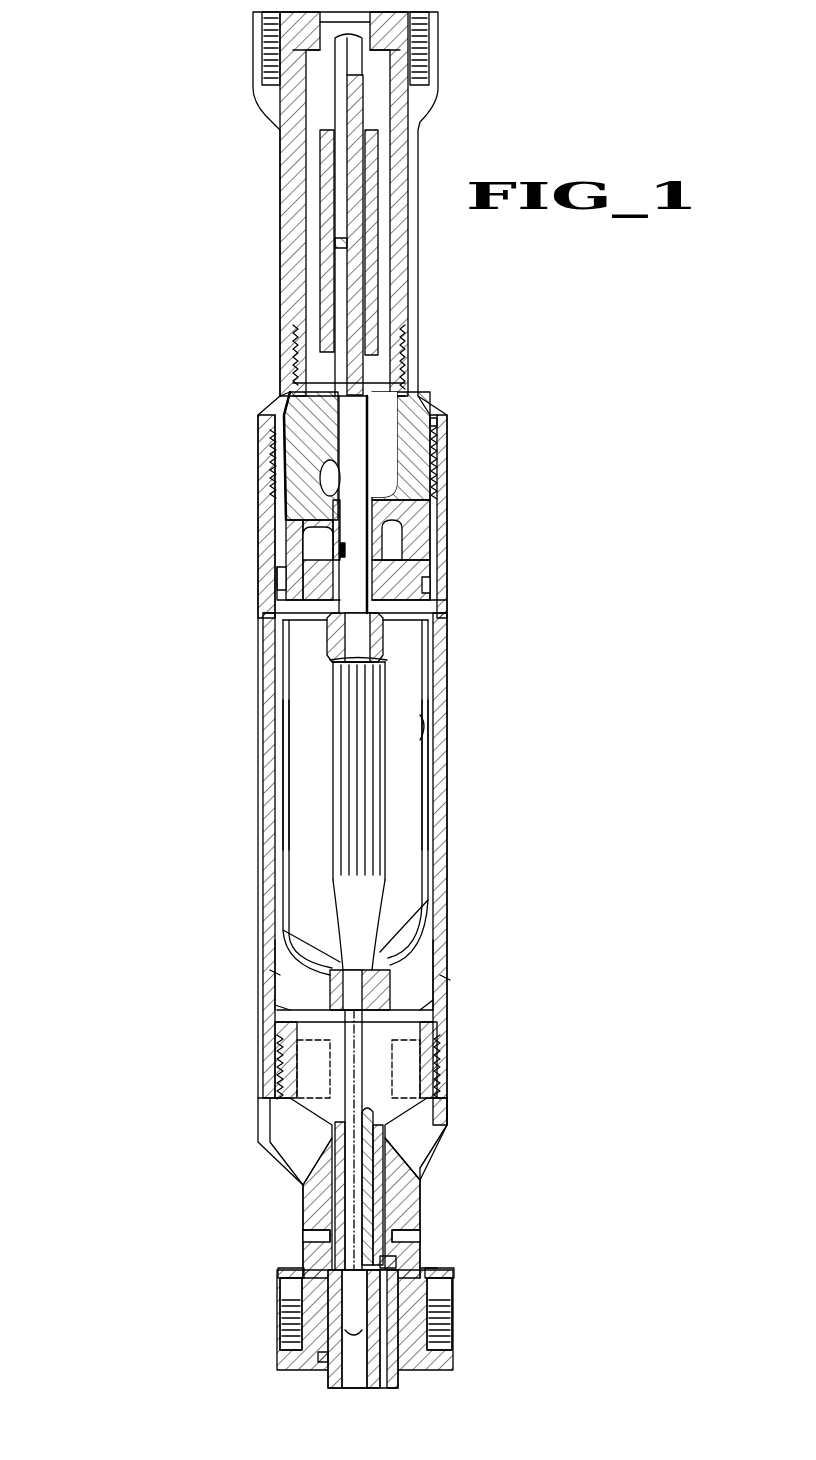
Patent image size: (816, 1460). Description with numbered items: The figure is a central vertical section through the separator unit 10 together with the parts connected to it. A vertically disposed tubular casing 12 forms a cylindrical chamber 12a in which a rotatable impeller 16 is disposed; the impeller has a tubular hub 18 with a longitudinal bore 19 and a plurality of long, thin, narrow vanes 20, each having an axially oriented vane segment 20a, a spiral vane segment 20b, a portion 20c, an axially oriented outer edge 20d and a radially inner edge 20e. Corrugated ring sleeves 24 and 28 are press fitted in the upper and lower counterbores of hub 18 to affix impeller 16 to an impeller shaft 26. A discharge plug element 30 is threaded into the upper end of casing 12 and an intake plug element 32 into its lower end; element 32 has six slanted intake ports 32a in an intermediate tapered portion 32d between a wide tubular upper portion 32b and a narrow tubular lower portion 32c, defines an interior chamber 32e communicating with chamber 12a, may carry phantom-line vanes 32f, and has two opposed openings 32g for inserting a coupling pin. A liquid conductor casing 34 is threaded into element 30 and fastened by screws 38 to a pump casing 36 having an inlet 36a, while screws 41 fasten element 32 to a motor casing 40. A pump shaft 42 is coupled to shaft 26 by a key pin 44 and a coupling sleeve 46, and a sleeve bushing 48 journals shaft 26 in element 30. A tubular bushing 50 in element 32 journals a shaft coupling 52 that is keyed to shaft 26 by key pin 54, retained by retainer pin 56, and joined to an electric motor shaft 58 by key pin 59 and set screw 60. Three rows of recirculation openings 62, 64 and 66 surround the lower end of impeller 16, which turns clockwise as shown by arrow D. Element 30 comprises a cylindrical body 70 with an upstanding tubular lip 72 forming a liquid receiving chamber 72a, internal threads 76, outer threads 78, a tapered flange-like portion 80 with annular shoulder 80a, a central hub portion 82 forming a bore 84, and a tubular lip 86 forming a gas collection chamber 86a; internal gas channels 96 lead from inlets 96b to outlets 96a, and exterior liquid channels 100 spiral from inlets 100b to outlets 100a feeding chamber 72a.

The separator unit 10 is at (124, 237).
The tubular casing 12 is at (258, 680).
The cylindrical chamber 12a is at (406, 614).
The rotatable impeller 16 is at (282, 777).
The tubular hub 18 is at (368, 760).
The longitudinal bore 19 is at (378, 664).
The vanes 20 is at (298, 728).
The axially oriented vane segment 20a is at (298, 805).
The vane segment 20b is at (398, 941).
The liner inner wall 20c is at (292, 830).
The axially oriented edge 20d is at (410, 1004).
The radially inner edge 20e is at (388, 842).
The corrugated ring sleeve 24 is at (375, 634).
The impeller shaft 26 is at (338, 585).
The corrugated ring sleeve 28 is at (380, 988).
The discharge plug element 30 is at (276, 383).
The intake plug element 32 is at (292, 1187).
The intake ports 32a is at (292, 1125).
The tubular upper portion 32b is at (448, 1108).
The tubular lower portion 32c is at (436, 1265).
The intermediate tapered portion 32d is at (445, 1152).
The interior chamber 32e is at (418, 1050).
The vanes 32f is at (297, 1073).
The openings 32g is at (305, 1238).
The liquid conductor casing 34 is at (288, 210).
The pump casing 36 is at (260, 22).
The inlet 36a is at (360, 23).
The screws 38 is at (272, 48).
The motor casing 40 is at (277, 1340).
The screws 41 is at (290, 1300).
The pump shaft 42 is at (345, 128).
The key pin 44 is at (363, 245).
The coupling sleeve 46 is at (379, 270).
The sleeve bushing 48 is at (382, 513).
The tubular bushing 50 is at (395, 1175).
The shaft coupling 52 is at (393, 1213).
The key pin 54 is at (378, 1193).
The retainer pin 56 is at (385, 1261).
The electric motor shaft 58 is at (355, 1335).
The key pin 59 is at (386, 1357).
The set screw 60 is at (322, 1357).
The openings 62 is at (270, 943).
The openings 64 is at (276, 1006).
The openings 66 is at (272, 972).
The cylindrical body 70 is at (275, 551).
The upstanding tubular lip 72 is at (284, 346).
The liquid receiving chamber 72a is at (383, 398).
The internal threads 76 is at (400, 352).
The outer threads 78 is at (441, 456).
The tapered flange-like body portion 80 is at (445, 416).
The annular shoulder 80a is at (448, 431).
The central hub portion 82 is at (400, 538).
The bore 84 is at (326, 546).
The tubular lip 86 is at (290, 565).
The gas collection chamber 86a is at (325, 601).
The internal gas channels 96 is at (290, 443).
The passage outlets 96a is at (286, 397).
The inlets 96b is at (302, 526).
The exterior liquid channels 100 is at (426, 548).
The outlet 100a is at (328, 478).
The inlet 100b is at (430, 601).
The arrow D is at (428, 727).